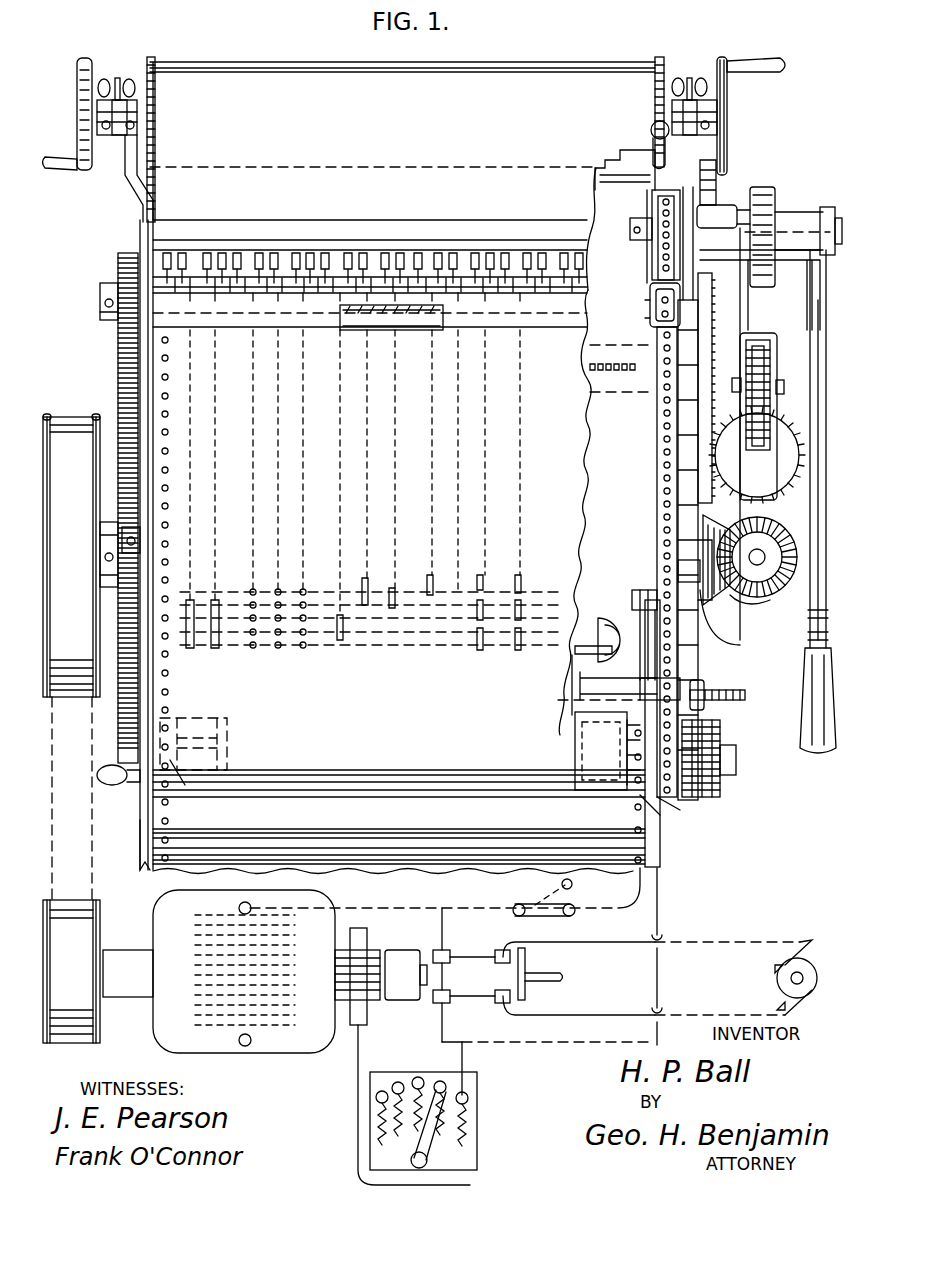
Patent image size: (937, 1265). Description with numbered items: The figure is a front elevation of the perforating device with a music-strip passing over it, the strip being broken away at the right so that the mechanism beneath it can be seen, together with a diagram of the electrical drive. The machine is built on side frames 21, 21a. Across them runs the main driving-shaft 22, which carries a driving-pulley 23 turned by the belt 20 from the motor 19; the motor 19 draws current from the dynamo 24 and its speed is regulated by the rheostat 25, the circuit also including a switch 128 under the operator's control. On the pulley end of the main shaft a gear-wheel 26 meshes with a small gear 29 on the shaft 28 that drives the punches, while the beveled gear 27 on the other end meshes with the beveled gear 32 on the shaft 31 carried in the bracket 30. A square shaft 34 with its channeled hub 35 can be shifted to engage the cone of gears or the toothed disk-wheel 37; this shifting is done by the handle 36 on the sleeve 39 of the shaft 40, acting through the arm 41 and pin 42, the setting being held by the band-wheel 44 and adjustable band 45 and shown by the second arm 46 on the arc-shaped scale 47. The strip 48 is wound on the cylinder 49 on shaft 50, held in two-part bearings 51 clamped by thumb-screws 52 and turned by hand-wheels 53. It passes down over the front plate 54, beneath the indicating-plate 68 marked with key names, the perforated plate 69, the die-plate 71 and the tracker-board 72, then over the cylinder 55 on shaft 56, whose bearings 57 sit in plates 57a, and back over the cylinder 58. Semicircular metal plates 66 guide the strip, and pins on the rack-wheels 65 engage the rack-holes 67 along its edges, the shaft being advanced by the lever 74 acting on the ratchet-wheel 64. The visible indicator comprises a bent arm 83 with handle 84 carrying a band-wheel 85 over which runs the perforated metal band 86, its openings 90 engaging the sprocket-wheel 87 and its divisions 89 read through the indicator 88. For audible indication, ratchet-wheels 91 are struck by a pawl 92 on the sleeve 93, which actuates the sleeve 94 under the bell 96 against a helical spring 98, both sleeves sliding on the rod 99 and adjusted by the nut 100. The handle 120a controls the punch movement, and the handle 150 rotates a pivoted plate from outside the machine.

The motor 19 is at (290, 992).
The belt 20 is at (98, 963).
The side frame 21 is at (677, 735).
The side frame 21a is at (122, 845).
The main driving-shaft 22 is at (659, 567).
The driving-pulley 23 is at (71, 555).
The dynamo 24 is at (773, 977).
The rheostat 25 is at (445, 1121).
The gear-wheel 26 is at (85, 798).
The beveled gear 27 is at (720, 627).
The shaft 28 is at (84, 309).
The small gear 29 is at (109, 545).
The bracket 30 is at (758, 418).
The shaft 31 is at (757, 557).
The beveled gear 32 is at (740, 582).
The square shaft 34 is at (778, 395).
The channeled hub 35 is at (767, 458).
The handle 36 is at (818, 523).
The disk-wheel 37 is at (716, 388).
The sleeve 39 is at (760, 290).
The shaft 40 is at (794, 214).
The arm 41 is at (763, 434).
The pin 42 is at (773, 396).
The band-wheel 44 is at (801, 188).
The adjustable band 45 is at (768, 216).
The second arm 46 is at (723, 204).
The arc-shaped scale 47 is at (730, 172).
The strip 48 is at (401, 481).
The cylinder 49 is at (397, 102).
The shaft 50 is at (431, 116).
The bearings 51 is at (430, 151).
The thumb-screws 52 is at (402, 71).
The hand-wheels 53 is at (414, 119).
The front plate 54 is at (399, 490).
The cylinder 55 is at (399, 815).
The shaft 56 is at (748, 762).
The bearings 57 is at (425, 752).
The plates 57a is at (570, 685).
The cylinder 58 is at (432, 818).
The ratchet-wheel 64 is at (623, 796).
The rack-wheels 65 is at (433, 798).
The semicircular metal plates 66 is at (393, 732).
The perforations 67 is at (191, 599).
The indicating-plate 68 is at (370, 255).
The perforated plate 69 is at (619, 245).
The perforated die-plate 71 is at (386, 340).
The tracker-board 72 is at (590, 451).
The lever 74 is at (601, 751).
The bent arm 83 is at (642, 229).
The handle 84 is at (632, 139).
The band-wheel 85 is at (603, 224).
The perforated metal band 86 is at (638, 562).
The sprocket-wheel 87 is at (696, 817).
The indicator 88 is at (641, 321).
The divisions 89 is at (626, 622).
The openings 90 is at (645, 493).
The ratchet-wheels 91 is at (727, 758).
The pawl 92 is at (714, 748).
The sleeve 93 is at (676, 674).
The sleeve 94 is at (591, 679).
The bell 96 is at (582, 629).
The helical spring 98 is at (578, 643).
The rod 99 is at (740, 688).
The nut 100 is at (718, 685).
The handle 120a is at (97, 792).
The switch 128 is at (525, 1026).
The handle 150 is at (159, 554).